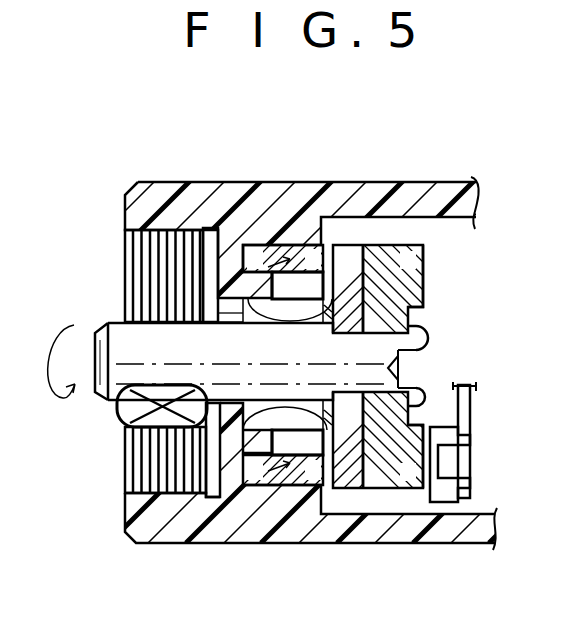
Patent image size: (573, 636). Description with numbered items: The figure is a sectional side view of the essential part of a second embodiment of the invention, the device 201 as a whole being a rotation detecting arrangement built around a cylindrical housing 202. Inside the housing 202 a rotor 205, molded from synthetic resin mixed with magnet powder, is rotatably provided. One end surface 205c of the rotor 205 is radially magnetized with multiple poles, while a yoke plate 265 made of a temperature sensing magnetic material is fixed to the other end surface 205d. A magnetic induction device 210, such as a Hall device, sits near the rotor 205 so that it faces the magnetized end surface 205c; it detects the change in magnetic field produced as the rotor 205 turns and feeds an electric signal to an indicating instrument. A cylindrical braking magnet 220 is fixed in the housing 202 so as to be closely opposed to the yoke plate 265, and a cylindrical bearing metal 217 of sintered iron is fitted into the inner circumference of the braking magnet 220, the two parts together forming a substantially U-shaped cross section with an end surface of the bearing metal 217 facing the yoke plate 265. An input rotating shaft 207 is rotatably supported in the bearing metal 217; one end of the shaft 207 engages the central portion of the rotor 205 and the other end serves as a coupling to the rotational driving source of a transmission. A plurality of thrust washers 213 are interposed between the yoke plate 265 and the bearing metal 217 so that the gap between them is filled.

The motor assembly 201 is at (119, 181).
The cylindrical housing 202 is at (171, 182).
The rotor 205 is at (421, 244).
The one end surface of the rotor 205c is at (474, 270).
The other end surface of the rotor 205d is at (360, 250).
The input rotating shaft 207 is at (124, 321).
The magnetic induction device 210 is at (440, 503).
The thrust washers 213 is at (302, 245).
The bearing metal 217 is at (124, 258).
The braking magnet 220 is at (224, 294).
The yoke plate 265 is at (333, 282).